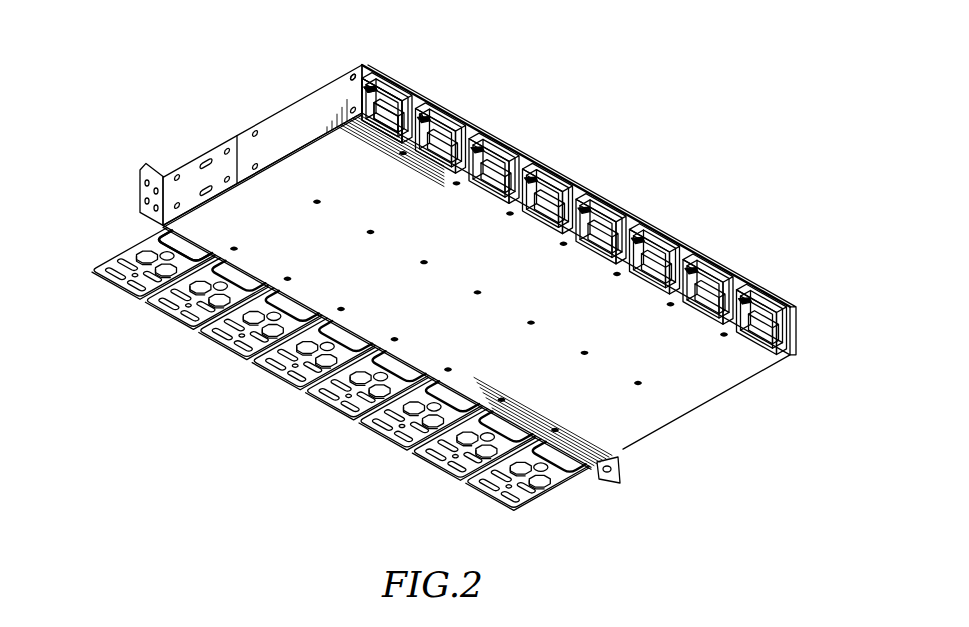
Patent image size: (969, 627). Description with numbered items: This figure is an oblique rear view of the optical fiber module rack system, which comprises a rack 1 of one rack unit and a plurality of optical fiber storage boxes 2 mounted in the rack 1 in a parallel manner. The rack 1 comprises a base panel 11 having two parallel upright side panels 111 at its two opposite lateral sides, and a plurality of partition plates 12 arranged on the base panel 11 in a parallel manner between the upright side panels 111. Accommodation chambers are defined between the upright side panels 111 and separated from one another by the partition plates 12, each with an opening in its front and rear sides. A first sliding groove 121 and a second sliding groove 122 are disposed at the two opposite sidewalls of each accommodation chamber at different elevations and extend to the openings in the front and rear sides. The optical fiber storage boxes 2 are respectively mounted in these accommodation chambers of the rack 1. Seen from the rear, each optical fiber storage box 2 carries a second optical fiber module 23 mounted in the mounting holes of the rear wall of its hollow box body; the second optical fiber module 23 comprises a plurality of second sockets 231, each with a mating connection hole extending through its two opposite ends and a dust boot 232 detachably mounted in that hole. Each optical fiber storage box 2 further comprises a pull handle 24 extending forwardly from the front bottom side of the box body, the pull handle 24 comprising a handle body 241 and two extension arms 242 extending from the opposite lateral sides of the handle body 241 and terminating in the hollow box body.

The rack 1 is at (601, 186).
The optical fiber storage box 2 is at (500, 69).
The base panel 11 is at (658, 247).
The upright side panel 111 is at (268, 124).
The partition plate 12 is at (359, 104).
The first sliding groove 121 is at (361, 93).
The second sliding groove 122 is at (421, 112).
The second optical fiber module 23 is at (411, 126).
The second socket 231 is at (371, 83).
The dust boot 232 is at (396, 98).
The pull handle 24 is at (308, 368).
The handle body 241 is at (128, 258).
The extension arm 242 is at (163, 230).